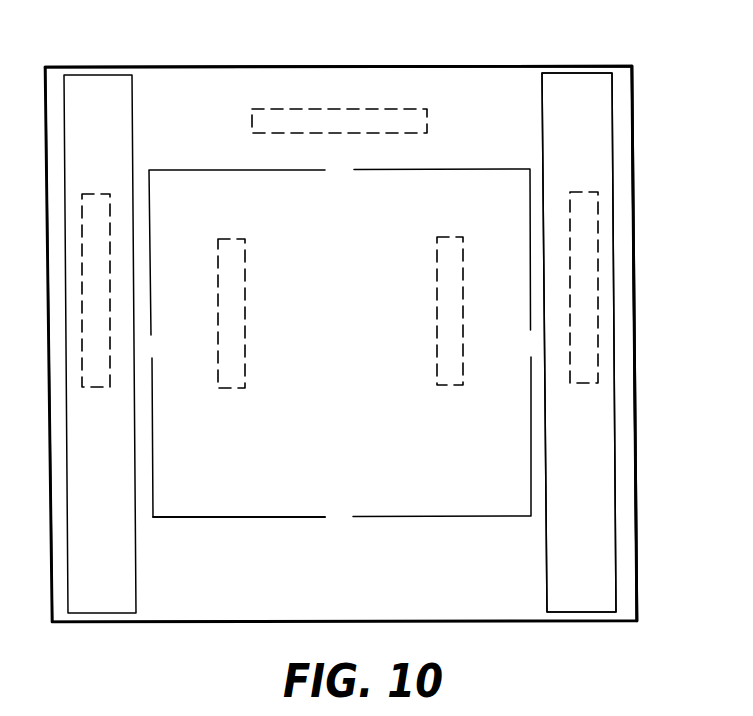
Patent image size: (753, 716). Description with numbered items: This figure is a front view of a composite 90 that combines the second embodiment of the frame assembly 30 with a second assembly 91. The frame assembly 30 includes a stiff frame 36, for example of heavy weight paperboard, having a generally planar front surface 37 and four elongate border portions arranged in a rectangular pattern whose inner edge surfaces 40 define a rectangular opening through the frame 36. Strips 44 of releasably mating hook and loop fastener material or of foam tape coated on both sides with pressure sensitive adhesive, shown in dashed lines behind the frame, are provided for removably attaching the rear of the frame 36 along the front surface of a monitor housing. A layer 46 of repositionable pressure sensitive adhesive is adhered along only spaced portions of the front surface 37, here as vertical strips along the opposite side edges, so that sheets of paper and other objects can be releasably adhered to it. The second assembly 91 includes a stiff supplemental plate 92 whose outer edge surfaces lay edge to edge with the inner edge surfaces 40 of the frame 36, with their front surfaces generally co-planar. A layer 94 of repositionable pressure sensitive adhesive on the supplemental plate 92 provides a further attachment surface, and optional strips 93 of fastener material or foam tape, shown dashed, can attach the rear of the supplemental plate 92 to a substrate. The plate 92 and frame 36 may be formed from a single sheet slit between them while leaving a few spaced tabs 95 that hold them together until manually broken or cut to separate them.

The frame assembly 30 is at (645, 122).
The frame 36 is at (183, 77).
The front surface 37 is at (625, 185).
The inner edge surfaces 40 is at (528, 200).
The strips 44 is at (367, 108).
The layer of repositionable pressure sensitive adhesive 46 is at (590, 597).
The composite 90 is at (650, 66).
The second assembly 91 is at (455, 520).
The supplemental plate 92 is at (358, 316).
The strips 93 is at (245, 378).
The layer of repositionable pressure sensitive adhesive 94 is at (230, 490).
The tabs 95 is at (338, 170).